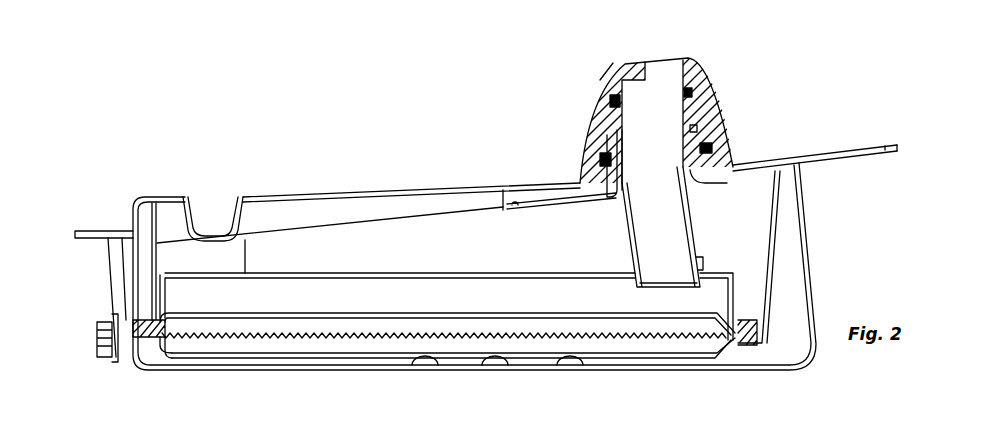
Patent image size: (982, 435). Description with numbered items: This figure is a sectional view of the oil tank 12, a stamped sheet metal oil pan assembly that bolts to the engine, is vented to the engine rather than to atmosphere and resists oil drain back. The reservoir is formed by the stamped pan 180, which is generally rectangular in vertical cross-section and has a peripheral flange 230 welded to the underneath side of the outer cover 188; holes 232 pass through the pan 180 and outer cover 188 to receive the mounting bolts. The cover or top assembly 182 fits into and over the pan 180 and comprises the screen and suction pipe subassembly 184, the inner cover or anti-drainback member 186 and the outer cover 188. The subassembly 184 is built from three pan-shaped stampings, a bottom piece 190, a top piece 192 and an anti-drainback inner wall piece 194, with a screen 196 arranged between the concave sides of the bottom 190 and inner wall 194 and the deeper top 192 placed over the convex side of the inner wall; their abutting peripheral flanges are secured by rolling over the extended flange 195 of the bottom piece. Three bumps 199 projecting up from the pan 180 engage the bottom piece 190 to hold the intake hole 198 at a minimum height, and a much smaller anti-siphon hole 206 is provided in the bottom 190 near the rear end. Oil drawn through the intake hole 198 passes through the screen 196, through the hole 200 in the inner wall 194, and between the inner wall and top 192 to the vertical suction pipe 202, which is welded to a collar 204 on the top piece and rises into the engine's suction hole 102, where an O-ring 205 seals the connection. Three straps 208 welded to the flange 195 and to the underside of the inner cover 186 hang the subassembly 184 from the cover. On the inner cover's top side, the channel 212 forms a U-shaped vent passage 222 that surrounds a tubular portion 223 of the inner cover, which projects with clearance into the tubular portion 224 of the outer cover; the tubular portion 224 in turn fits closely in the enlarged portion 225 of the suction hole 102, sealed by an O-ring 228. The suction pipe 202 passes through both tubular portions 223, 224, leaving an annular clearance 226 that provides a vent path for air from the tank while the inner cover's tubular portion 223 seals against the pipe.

The oil tank 12 is at (369, 193).
The suction hole 102 is at (668, 80).
The pan 180 is at (810, 233).
The top assembly 182 is at (413, 191).
The screen and suction pipe subassembly 184 is at (737, 357).
The inner cover 186 is at (290, 207).
The outer cover 188 is at (228, 197).
The bottom piece 190 is at (360, 359).
The top piece 192 is at (290, 272).
The anti-drainback inner wall piece 194 is at (362, 320).
The flange 195 is at (155, 295).
The screen 196 is at (510, 333).
The intake hole 198 is at (447, 356).
The bumps 199 is at (565, 370).
The hole 200 is at (167, 327).
The suction pipe 202 is at (702, 234).
The collar 204 is at (704, 260).
The O-ring 205 is at (612, 100).
The anti-siphon hole 206 is at (190, 352).
The straps 208 is at (165, 208).
The channel 212 is at (510, 203).
The U-shaped vent passage 222 is at (202, 207).
The tubular portion 223 is at (613, 195).
The tubular portion 224 is at (700, 133).
The enlarged portion 225 is at (605, 158).
The annular clearance 226 is at (690, 120).
The O-ring 228 is at (708, 150).
The peripheral flange 230 is at (890, 158).
The holes 232 is at (852, 150).